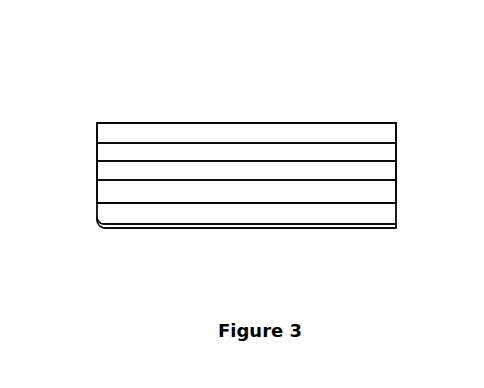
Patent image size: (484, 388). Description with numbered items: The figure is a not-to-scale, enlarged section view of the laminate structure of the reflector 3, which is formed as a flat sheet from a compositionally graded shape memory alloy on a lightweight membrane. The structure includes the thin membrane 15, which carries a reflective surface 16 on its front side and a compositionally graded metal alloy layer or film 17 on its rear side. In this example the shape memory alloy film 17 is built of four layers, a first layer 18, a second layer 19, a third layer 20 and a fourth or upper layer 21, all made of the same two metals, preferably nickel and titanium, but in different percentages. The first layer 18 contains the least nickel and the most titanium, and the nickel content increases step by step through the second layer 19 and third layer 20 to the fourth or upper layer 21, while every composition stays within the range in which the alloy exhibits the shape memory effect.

The reflector 3 is at (338, 89).
The thin membrane 15 is at (396, 212).
The reflective surface 16 is at (396, 228).
The compositionally graded metal alloy layer or film 17 is at (86, 123).
The first layer 18 is at (396, 192).
The second layer 19 is at (396, 170).
The third layer 20 is at (396, 148).
The fourth or upper layer 21 is at (396, 132).